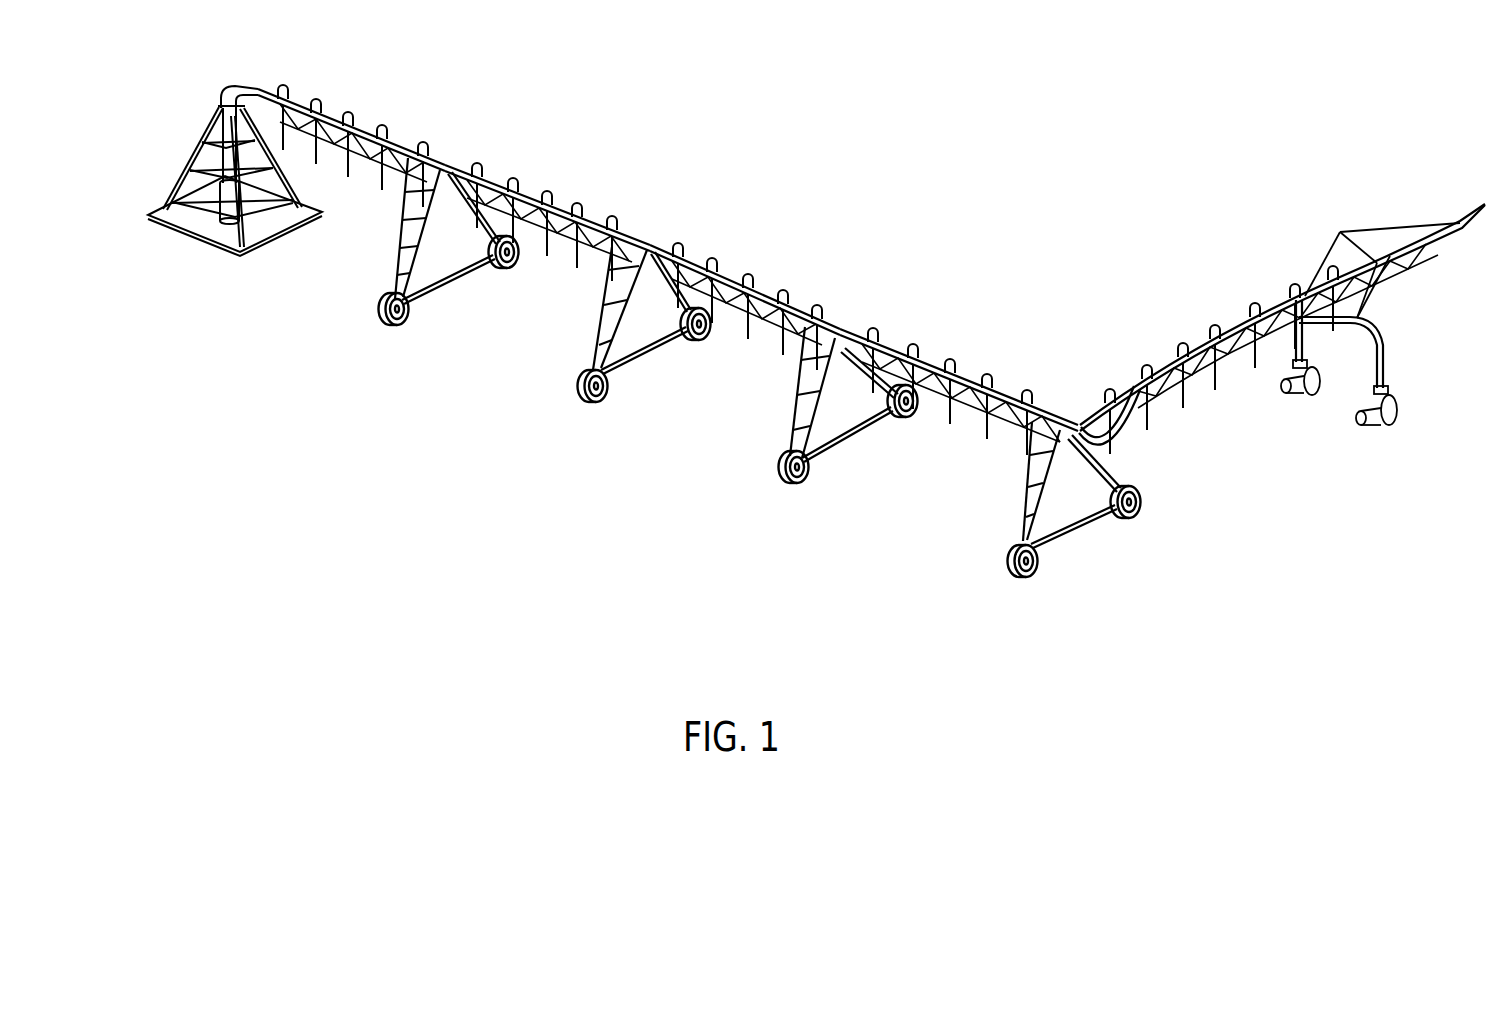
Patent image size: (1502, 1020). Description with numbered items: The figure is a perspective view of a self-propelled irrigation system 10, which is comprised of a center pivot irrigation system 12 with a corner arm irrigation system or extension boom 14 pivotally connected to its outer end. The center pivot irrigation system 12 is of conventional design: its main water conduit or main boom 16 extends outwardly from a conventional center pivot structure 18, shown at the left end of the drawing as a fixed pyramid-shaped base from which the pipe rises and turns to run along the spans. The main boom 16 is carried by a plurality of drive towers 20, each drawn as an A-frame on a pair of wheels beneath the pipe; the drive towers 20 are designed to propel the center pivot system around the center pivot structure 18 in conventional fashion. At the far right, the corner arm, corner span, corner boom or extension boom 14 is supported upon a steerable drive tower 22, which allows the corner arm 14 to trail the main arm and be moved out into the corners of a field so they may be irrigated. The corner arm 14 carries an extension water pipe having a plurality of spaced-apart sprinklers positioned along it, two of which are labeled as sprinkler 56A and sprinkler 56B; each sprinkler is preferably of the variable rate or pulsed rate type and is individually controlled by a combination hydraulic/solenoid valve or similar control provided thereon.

The self-propelled irrigation system 10 is at (1005, 284).
The center pivot irrigation system 12 is at (718, 218).
The corner arm irrigation system 14 is at (1221, 300).
The main water conduit 16 is at (417, 123).
The center pivot structure 18 is at (300, 174).
The drive towers 20 is at (376, 255).
The steerable drive tower 22 is at (1353, 383).
The sprinkler 56A is at (1147, 420).
The sprinkler 56B is at (1186, 400).